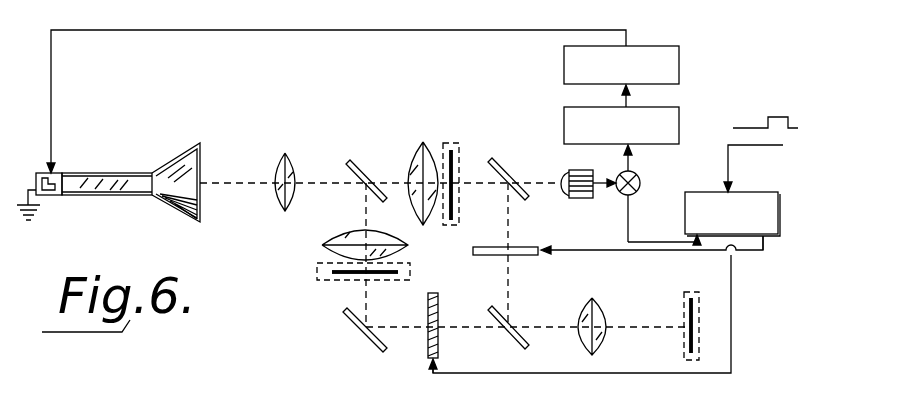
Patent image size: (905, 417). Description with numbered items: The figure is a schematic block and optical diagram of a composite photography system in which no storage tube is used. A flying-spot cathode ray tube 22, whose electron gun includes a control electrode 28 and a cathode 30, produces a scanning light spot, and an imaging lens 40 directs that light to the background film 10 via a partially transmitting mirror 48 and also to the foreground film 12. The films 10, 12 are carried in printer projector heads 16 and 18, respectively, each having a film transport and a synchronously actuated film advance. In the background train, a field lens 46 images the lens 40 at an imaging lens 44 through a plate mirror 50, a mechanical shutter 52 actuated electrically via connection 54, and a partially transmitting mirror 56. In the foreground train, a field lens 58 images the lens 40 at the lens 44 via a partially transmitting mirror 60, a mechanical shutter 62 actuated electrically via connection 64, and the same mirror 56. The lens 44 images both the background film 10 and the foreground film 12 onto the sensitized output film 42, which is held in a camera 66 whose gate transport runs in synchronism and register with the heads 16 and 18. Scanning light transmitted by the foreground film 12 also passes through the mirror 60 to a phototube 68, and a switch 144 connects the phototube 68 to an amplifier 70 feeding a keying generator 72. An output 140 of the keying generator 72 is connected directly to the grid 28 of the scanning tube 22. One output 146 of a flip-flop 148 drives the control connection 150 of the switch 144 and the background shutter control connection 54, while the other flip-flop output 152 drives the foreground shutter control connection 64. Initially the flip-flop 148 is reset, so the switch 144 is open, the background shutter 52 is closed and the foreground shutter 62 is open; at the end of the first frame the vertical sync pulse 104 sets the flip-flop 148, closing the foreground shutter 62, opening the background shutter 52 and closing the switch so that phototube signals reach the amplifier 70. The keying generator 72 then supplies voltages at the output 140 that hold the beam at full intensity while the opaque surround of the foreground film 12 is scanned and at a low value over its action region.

The background film 10 is at (335, 280).
The foreground film 12 is at (451, 148).
The printer projector head 16 is at (412, 273).
The printer projector head 18 is at (459, 197).
The flying-spot cathode ray tube 22 is at (172, 162).
The control electrode 28 is at (75, 172).
The cathode 30 is at (28, 182).
The imaging lens 40 is at (286, 153).
The sensitized photographic film 42 is at (684, 350).
The imaging lens 44 is at (605, 340).
The field lens 46 is at (335, 238).
The partially transmitting mirror 48 is at (368, 177).
The plate mirror 50 is at (370, 342).
The mechanical shutter 52 is at (440, 346).
The connection 54 is at (430, 372).
The partially transmitting mirror 56 is at (512, 345).
The field lens 58 is at (412, 155).
The partially transmitting mirror 60 is at (505, 164).
The mechanical shutter 62 is at (545, 232).
The connection 64 is at (572, 254).
The camera 66 is at (684, 310).
The phototube 68 is at (590, 166).
The amplifier 70 is at (680, 118).
The keying generator 72 is at (563, 65).
The vertical sync pulse 104 is at (760, 118).
The output 140 is at (630, 30).
The switch 144 is at (637, 175).
The flip-flop output 146 is at (687, 240).
The flip-flop 148 is at (685, 198).
The control connection 150 is at (627, 222).
The flip-flop output 152 is at (770, 252).